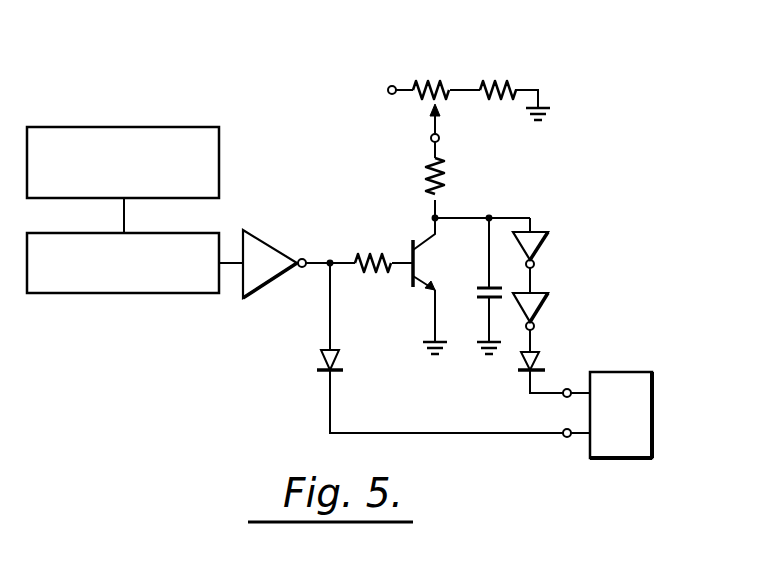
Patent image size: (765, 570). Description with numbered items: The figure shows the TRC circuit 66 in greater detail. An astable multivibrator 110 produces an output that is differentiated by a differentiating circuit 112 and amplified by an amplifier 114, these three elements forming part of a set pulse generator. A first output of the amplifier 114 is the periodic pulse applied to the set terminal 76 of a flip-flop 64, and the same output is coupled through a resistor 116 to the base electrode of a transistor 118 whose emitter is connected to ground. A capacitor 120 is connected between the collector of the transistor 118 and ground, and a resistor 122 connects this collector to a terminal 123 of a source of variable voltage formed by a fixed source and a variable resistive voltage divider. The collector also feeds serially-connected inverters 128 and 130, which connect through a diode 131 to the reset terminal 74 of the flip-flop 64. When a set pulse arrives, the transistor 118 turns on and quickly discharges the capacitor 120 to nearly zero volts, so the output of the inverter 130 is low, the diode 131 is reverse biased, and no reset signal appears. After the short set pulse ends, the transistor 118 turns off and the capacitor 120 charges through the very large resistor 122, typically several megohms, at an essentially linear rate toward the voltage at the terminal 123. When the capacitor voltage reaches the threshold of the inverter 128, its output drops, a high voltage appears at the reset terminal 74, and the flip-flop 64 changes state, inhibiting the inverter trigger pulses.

The astable multivibrator 110 is at (129, 127).
The differentiating circuit 112 is at (125, 294).
The amplifier 114 is at (266, 243).
The resistor 116 is at (378, 250).
The transistor 118 is at (424, 257).
The capacitor 120 is at (483, 301).
The resistor 122 is at (450, 176).
The terminal 123 is at (430, 139).
The TRC circuit 66 is at (470, 57).
The inverter 128 is at (545, 248).
The inverter 130 is at (545, 312).
The diode 131 is at (540, 363).
The flip-flop 64 is at (617, 371).
The reset terminal 74 is at (564, 397).
The set terminal 76 is at (564, 437).